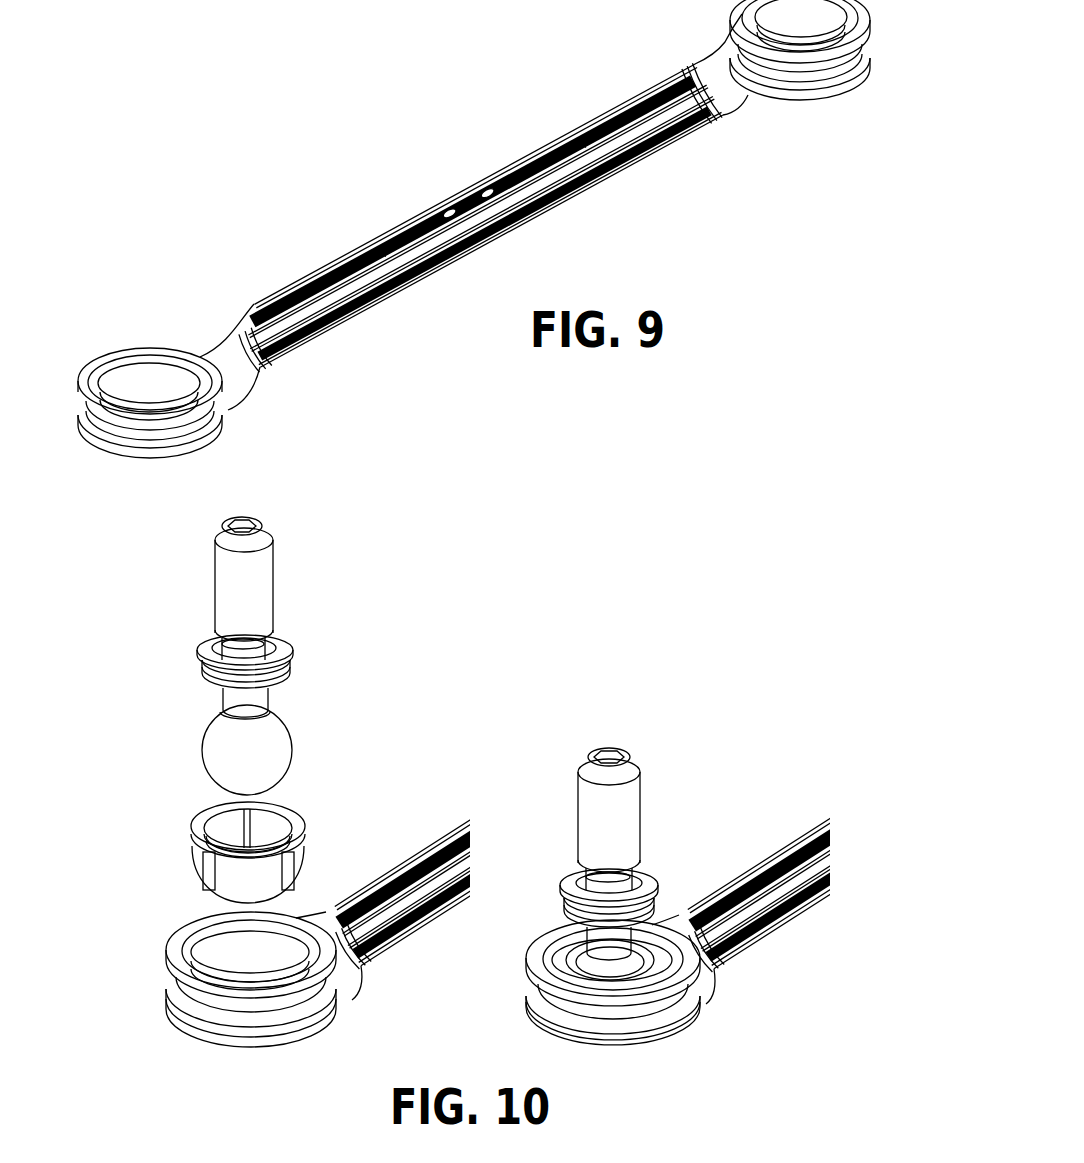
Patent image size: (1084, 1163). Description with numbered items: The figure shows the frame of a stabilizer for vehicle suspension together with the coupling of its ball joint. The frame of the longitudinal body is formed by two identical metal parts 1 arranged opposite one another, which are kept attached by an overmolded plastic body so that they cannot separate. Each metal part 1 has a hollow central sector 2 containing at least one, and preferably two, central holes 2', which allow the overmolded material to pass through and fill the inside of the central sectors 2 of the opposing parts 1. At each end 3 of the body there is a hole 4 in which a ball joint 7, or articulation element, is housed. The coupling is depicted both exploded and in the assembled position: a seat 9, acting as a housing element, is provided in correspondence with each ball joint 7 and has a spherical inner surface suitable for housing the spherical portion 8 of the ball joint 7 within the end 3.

In FIG. 9, the metal part 1 is at (372, 255).
In FIG. 10, the metal part 1 is at (412, 858).
In FIG. 9, the central sector 2 is at (483, 145).
In FIG. 9, the central hole 2' is at (462, 146).
In FIG. 10, the end 3 is at (192, 940).
In FIG. 9, the hole 4 is at (143, 378).
In FIG. 10, the ball joint 7 is at (290, 585).
In FIG. 10, the spherical portion 8 is at (268, 760).
In FIG. 10, the seat 9 is at (300, 828).